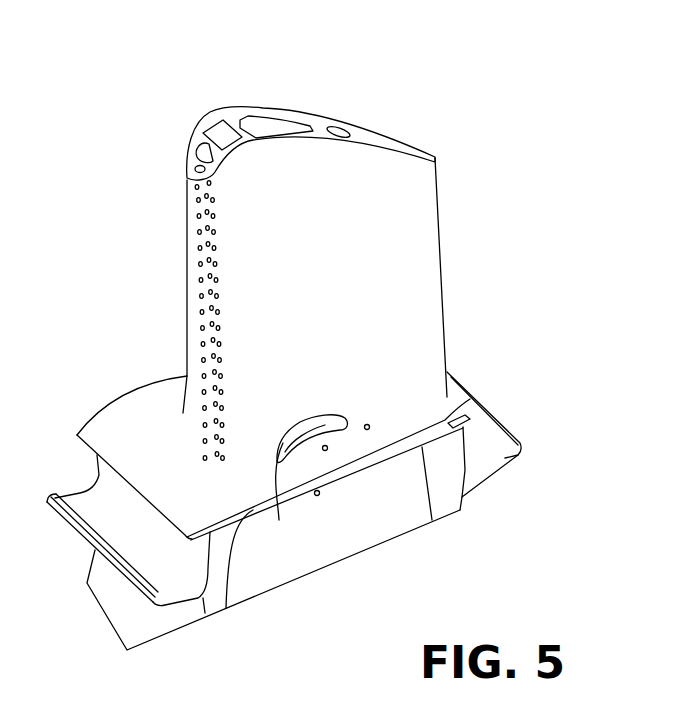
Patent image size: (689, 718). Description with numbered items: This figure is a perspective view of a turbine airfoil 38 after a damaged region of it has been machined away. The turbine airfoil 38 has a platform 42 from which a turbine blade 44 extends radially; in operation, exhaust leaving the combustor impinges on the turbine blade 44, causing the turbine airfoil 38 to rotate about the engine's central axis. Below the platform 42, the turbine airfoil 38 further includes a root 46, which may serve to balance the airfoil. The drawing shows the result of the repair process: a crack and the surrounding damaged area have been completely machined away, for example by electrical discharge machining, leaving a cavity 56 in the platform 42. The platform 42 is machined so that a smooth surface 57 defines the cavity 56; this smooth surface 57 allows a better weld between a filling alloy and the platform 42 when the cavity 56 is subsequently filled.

The turbine airfoil 38 is at (293, 359).
The turbine blade 44 is at (412, 245).
The platform 42 is at (435, 432).
The root 46 is at (217, 587).
The cavity 56 is at (293, 448).
The smooth surface 57 is at (283, 442).